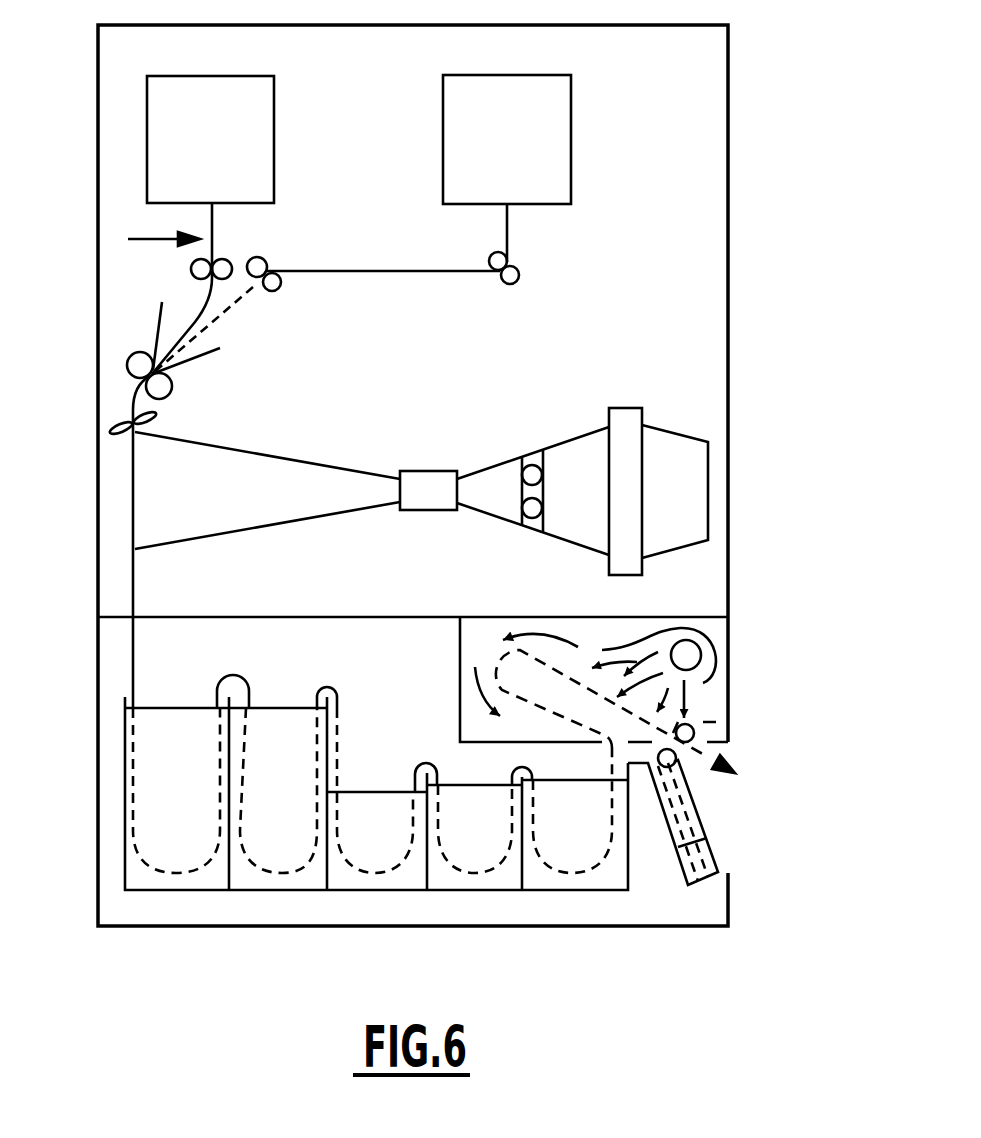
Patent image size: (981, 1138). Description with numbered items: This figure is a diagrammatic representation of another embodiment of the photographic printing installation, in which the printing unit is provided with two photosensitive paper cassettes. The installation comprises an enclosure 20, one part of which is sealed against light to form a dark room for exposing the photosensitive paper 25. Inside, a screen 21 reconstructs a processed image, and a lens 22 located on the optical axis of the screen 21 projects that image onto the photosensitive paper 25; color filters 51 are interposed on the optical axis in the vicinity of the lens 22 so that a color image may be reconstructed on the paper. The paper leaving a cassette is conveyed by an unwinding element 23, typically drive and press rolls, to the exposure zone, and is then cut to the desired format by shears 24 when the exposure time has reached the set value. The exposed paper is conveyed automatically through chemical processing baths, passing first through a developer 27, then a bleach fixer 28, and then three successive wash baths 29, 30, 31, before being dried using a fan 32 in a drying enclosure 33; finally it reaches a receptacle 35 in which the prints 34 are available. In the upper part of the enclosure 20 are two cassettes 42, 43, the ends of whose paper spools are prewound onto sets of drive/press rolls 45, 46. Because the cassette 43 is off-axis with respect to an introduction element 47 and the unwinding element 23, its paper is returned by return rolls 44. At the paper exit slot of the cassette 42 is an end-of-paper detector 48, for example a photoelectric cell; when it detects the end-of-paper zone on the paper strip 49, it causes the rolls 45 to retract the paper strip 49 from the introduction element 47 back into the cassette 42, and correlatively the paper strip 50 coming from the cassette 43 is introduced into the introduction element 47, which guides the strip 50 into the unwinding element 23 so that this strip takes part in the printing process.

The enclosure 20 is at (328, 926).
The screen 21 is at (693, 472).
The lens 22 is at (427, 480).
The unwinding element 23 is at (163, 387).
The shears 24 is at (152, 416).
The photosensitive paper 25 is at (133, 497).
The developer 27 is at (133, 873).
The bleach fixer 28 is at (247, 873).
The wash bath 29 is at (372, 880).
The wash bath 30 is at (452, 880).
The wash bath 31 is at (562, 880).
The fan 32 is at (703, 643).
The drying enclosure 33 is at (717, 733).
The prints 34 is at (702, 813).
The receptacle 35 is at (707, 840).
The cassette 42 is at (258, 93).
The cassette 43 is at (555, 93).
The return rolls 44 is at (518, 272).
The drive/press rolls 45 is at (192, 268).
The drive/press rolls 46 is at (277, 291).
The introduction element 47 is at (155, 335).
The end-of-paper detector 48 is at (172, 238).
The paper strip 49 is at (212, 232).
The paper strip 50 is at (353, 271).
The color filters 51 is at (532, 455).